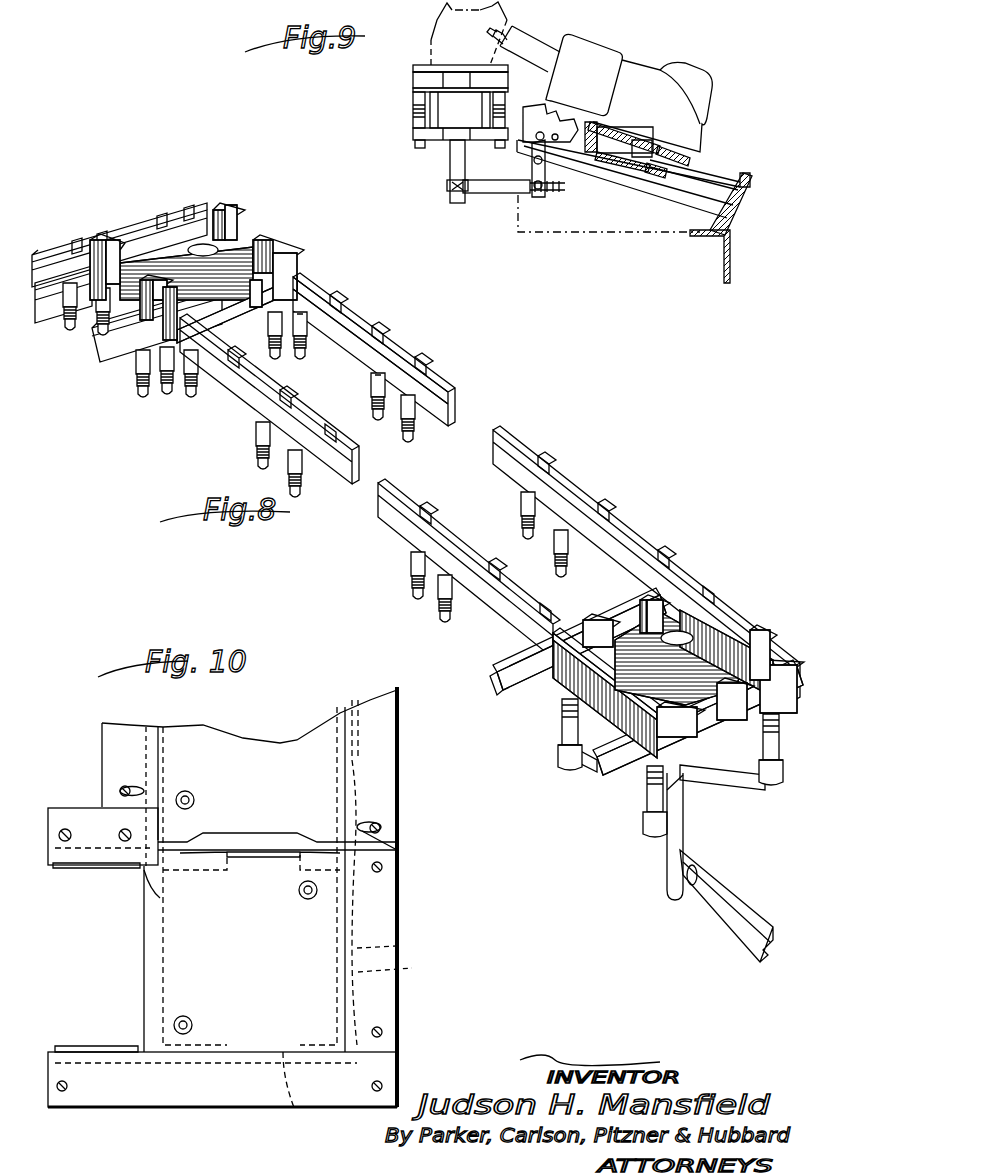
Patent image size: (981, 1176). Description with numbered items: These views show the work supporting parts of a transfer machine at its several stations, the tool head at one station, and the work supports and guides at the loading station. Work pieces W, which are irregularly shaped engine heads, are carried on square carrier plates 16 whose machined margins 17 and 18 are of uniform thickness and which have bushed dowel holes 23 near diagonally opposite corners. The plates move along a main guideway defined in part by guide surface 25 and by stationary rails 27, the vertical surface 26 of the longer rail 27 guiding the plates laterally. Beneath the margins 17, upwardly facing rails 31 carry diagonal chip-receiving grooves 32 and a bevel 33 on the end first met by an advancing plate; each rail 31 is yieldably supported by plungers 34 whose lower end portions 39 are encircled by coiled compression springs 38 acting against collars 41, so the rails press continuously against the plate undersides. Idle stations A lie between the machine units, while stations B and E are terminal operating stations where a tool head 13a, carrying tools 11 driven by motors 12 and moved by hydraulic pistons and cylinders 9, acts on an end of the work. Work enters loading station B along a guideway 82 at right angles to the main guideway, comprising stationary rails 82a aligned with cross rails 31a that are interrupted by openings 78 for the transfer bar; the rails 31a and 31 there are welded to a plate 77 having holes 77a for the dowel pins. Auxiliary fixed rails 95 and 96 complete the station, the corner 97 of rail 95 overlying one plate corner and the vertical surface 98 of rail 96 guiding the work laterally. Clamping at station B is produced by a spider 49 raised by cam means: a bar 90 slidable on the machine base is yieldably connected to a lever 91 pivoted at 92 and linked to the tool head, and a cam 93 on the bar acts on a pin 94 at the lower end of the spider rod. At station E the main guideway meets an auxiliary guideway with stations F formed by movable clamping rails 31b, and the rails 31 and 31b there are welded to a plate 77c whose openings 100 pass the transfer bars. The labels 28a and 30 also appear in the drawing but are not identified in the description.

In FIG. 9, the hydraulic pistons and cylinders 9 is at (615, 160).
In FIG. 9, the tools 11 is at (515, 32).
In FIG. 9, the motors 12 is at (665, 97).
In FIG. 9, the tool head 13a is at (605, 45).
In FIG. 9, the carrier plate 16 is at (412, 66).
In FIG. 10, the carrier plate 16 is at (296, 740).
In FIG. 10, the margin 17 is at (150, 976).
In FIG. 10, the end margin 18 is at (295, 1110).
In FIG. 10, the bushed dowel holes 23 is at (188, 791).
In FIG. 8, the guide surface 25 is at (336, 300).
In FIG. 10, the vertical surface 26 is at (146, 790).
In FIG. 10, the rails 27 is at (102, 748).
In FIG. 10, the strip 28a is at (397, 850).
In FIG. 9, the machine bed 30 is at (730, 258).
In FIG. 8, the rails 31 is at (245, 402).
In FIG. 10, the rails 31 is at (163, 757).
In FIG. 9, the cross rails 31a is at (509, 78).
In FIG. 8, the cross rails 31a is at (638, 600).
In FIG. 10, the cross rails 31a is at (225, 838).
In FIG. 8, the movable clamping rails 31b is at (60, 283).
In FIG. 8, the chip-receiving grooves 32 is at (762, 645).
In FIG. 8, the bevel 33 is at (290, 400).
In FIG. 8, the plungers 34 is at (262, 432).
In FIG. 8, the coiled compression spring 38 is at (290, 455).
In FIG. 8, the lower end portion 39 is at (560, 712).
In FIG. 8, the collar 41 is at (582, 730).
In FIG. 8, the spider 49 is at (680, 780).
In FIG. 8, the plate 77 is at (735, 635).
In FIG. 10, the plate 77 is at (273, 833).
In FIG. 8, the holes 77a is at (675, 630).
In FIG. 8, the plate 77c is at (175, 260).
In FIG. 8, the openings 78 is at (615, 640).
In FIG. 8, the guideway 82 is at (553, 772).
In FIG. 10, the guideway 82 is at (65, 889).
In FIG. 8, the stationary rails 82a is at (495, 678).
In FIG. 10, the stationary rails 82a is at (103, 872).
In FIG. 9, the bar 90 is at (492, 194).
In FIG. 8, the bar 90 is at (740, 938).
In FIG. 9, the lever 91 is at (532, 165).
In FIG. 9, the pivot 92 is at (546, 160).
In FIG. 9, the cam 93 is at (447, 184).
In FIG. 8, the cam 93 is at (692, 893).
In FIG. 9, the pin 94 is at (452, 190).
In FIG. 8, the pin 94 is at (698, 870).
In FIG. 10, the auxiliary fixed rail 95 is at (82, 815).
In FIG. 10, the auxiliary fixed rail 96 is at (165, 1100).
In FIG. 10, the corner 97 is at (163, 887).
In FIG. 10, the vertical surface 98 is at (255, 1065).
In FIG. 8, the openings 100 is at (258, 240).
In FIG. 8, the idle stations A is at (370, 312).
In FIG. 10, the idle stations A is at (350, 768).
In FIG. 8, the loading station B is at (736, 576).
In FIG. 10, the loading station B is at (330, 989).
In FIG. 8, the work station E is at (255, 218).
In FIG. 8, the stations F is at (50, 250).
In FIG. 9, the work pieces W is at (428, 18).